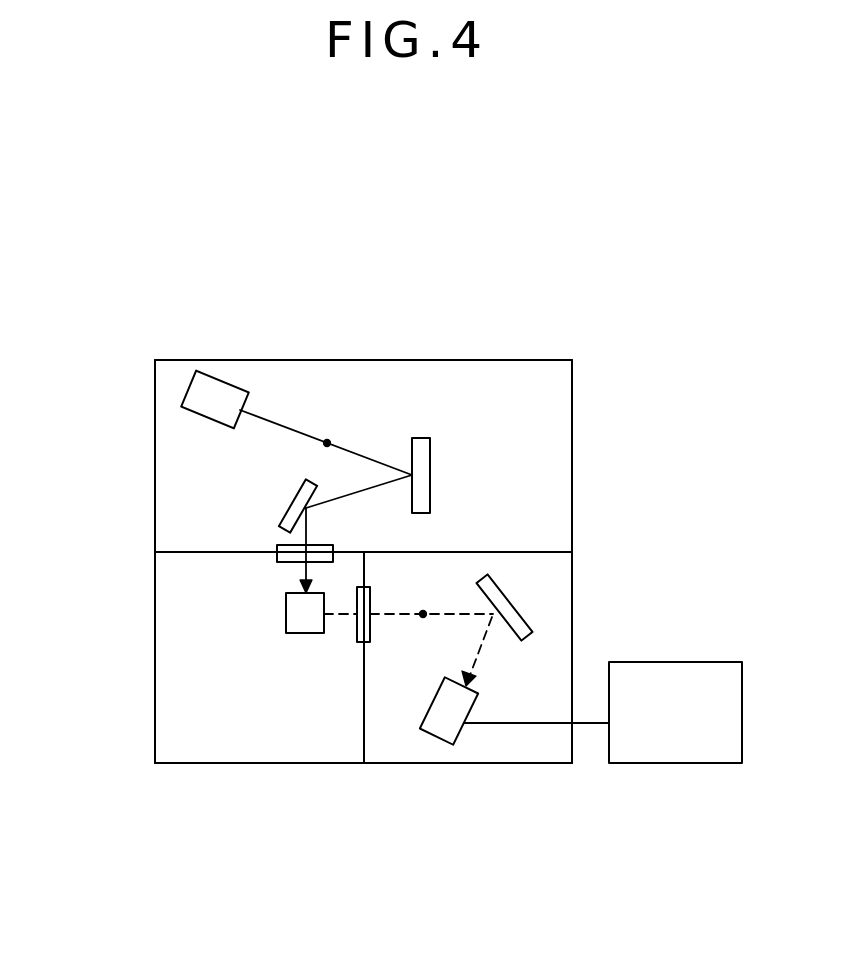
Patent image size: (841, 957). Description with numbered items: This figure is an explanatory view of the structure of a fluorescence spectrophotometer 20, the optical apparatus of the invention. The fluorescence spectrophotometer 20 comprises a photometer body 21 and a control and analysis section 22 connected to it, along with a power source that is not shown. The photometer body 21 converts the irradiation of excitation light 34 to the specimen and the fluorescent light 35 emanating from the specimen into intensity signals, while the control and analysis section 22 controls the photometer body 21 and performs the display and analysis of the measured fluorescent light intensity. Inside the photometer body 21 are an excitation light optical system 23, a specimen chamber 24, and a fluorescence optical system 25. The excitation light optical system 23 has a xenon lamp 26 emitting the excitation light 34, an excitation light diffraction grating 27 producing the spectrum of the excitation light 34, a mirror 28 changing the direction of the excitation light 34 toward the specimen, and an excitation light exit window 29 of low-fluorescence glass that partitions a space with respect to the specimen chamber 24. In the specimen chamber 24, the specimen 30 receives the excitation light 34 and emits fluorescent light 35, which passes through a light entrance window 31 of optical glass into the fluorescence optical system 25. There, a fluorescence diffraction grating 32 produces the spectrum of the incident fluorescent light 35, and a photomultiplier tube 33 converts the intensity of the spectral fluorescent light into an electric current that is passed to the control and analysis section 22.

The fluorescence spectrophotometer 20 is at (108, 363).
The photometer body 21 is at (155, 440).
The control and analysis section 22 is at (698, 660).
The excitation light optical system 23 is at (482, 393).
The specimen chamber 24 is at (185, 718).
The fluorescence optical system 25 is at (550, 603).
The xenon lamp 26 is at (195, 375).
The excitation light diffraction grating 27 is at (427, 472).
The mirror 28 is at (292, 495).
The excitation light exit window 29 is at (277, 548).
The specimen 30 is at (286, 616).
The light entrance window 31 is at (353, 632).
The fluorescence diffraction grating 32 is at (503, 597).
The photomultiplier tube 33 is at (426, 719).
The excitation light 34 is at (327, 443).
The fluorescent light 35 is at (423, 618).